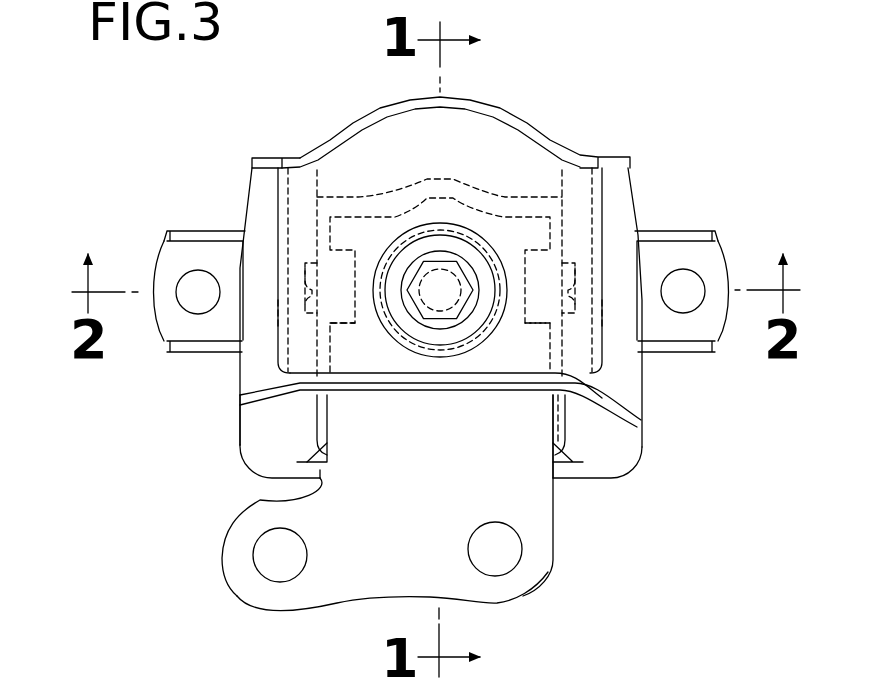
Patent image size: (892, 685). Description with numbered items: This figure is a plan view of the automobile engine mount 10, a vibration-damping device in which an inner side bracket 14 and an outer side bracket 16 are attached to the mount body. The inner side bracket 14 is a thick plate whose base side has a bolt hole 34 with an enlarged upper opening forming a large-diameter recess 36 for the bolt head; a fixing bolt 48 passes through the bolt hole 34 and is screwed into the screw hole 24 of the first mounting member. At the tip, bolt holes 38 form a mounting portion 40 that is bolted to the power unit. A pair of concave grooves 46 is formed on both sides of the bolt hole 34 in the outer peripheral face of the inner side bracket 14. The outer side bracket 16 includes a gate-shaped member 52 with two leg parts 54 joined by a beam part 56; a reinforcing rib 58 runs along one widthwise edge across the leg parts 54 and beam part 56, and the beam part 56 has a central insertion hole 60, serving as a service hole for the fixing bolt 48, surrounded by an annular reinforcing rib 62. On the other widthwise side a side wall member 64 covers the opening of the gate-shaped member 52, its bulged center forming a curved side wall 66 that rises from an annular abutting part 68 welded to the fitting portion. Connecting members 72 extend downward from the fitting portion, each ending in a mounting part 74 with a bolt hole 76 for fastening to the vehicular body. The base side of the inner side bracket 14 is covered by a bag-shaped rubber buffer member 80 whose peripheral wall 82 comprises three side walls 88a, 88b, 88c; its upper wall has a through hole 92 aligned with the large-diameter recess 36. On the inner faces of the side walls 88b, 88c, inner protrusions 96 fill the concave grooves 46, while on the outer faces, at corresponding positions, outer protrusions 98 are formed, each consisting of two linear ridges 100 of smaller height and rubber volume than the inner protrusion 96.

The engine mount 10 is at (679, 112).
The inner side bracket 14 is at (565, 533).
The outer side bracket 16 is at (659, 188).
The screw hole 24 is at (447, 268).
The bolt hole 34 is at (472, 189).
The large-diameter recess 36 is at (420, 262).
The bolt holes 38 is at (283, 572).
The mounting portion 40 is at (385, 585).
The concave groove 46 is at (316, 197).
The fixing bolt 48 is at (440, 300).
The gate-shaped member 52 is at (294, 154).
The leg parts 54 is at (278, 327).
The beam part 56 is at (336, 350).
The reinforcing rib 58 is at (517, 376).
The insertion hole 60 is at (466, 333).
The reinforcing rib 62 is at (442, 345).
The side wall member 64 is at (587, 149).
The side wall 66 is at (448, 108).
The abutting part 68 is at (610, 463).
The connecting members 72 is at (158, 237).
The mounting part 74 is at (195, 326).
The bolt hole 76 is at (193, 312).
The rubber buffer member 80 is at (303, 427).
The peripheral wall 82 is at (352, 186).
The side wall 88a is at (503, 207).
The side wall 88b is at (327, 413).
The side wall 88c is at (562, 443).
The through hole 92 is at (431, 198).
The inner protrusion 96 is at (348, 306).
The outer protrusion 98 is at (305, 252).
The linear ridges 100 is at (313, 267).